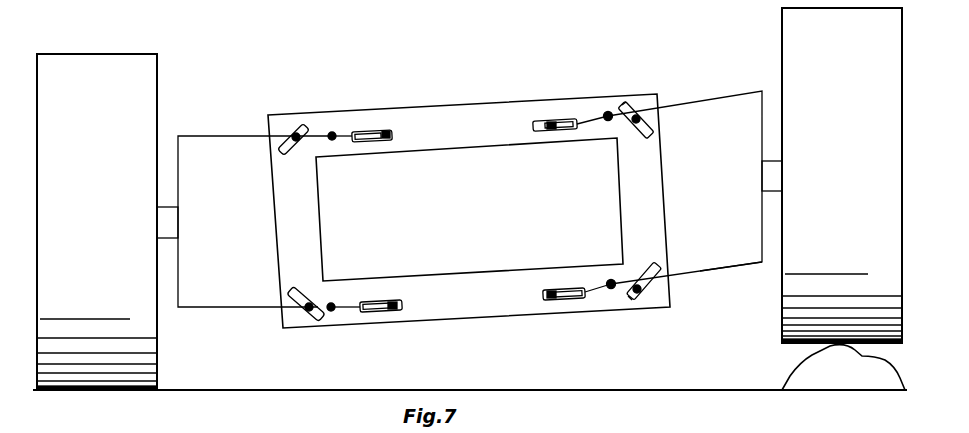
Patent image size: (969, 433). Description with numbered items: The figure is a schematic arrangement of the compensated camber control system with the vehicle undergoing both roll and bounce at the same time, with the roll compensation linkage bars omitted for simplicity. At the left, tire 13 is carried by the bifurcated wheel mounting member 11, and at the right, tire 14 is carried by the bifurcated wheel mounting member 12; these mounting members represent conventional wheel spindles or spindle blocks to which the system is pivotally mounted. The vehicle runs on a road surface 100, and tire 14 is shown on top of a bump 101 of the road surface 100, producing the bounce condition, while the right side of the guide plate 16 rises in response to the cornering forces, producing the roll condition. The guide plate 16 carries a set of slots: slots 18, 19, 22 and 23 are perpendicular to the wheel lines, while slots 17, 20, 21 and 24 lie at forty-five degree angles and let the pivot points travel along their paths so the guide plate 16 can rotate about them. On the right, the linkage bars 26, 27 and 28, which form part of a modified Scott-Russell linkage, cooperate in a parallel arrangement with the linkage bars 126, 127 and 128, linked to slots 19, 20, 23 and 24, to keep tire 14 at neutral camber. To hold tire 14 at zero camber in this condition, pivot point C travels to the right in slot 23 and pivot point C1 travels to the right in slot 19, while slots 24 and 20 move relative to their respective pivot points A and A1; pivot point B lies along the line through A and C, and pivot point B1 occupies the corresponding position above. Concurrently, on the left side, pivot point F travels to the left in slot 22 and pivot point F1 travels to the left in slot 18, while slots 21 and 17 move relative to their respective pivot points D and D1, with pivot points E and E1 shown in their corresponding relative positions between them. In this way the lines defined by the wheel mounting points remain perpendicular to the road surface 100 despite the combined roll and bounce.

The bifurcated wheel mounting member 11 is at (165, 218).
The bifurcated wheel mounting member 12 is at (775, 172).
The tire 13 is at (110, 97).
The tire 14 is at (860, 43).
The guide plate 16 is at (452, 106).
The slot 17 is at (281, 149).
The slot 18 is at (366, 145).
The slot 19 is at (545, 133).
The slot 20 is at (659, 122).
The slot 21 is at (293, 291).
The slot 22 is at (397, 300).
The slot 23 is at (574, 301).
The slot 24 is at (658, 267).
The linkage bar 26 is at (603, 114).
The linkage bar 27 is at (710, 101).
The linkage bar 28 is at (621, 122).
The road surface 100 is at (200, 390).
The bump 101 is at (797, 371).
The linkage bar 126 is at (609, 280).
The linkage bar 127 is at (750, 265).
The linkage bar 128 is at (624, 293).
The pivot point A is at (646, 298).
The pivot point A1 is at (637, 110).
The pivot point B is at (609, 273).
The pivot point B1 is at (606, 111).
The pivot point C is at (545, 301).
The pivot point C1 is at (552, 116).
The pivot point D is at (300, 318).
The pivot point D1 is at (289, 124).
The pivot point E is at (334, 318).
The pivot point E1 is at (331, 129).
The pivot point F is at (381, 318).
The pivot point F1 is at (383, 126).